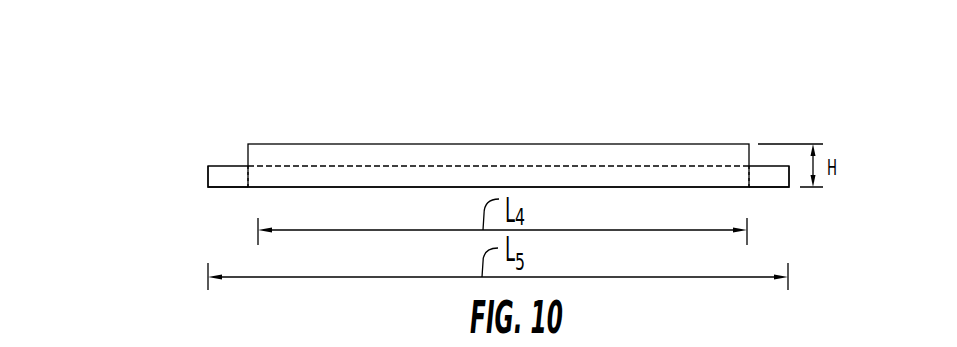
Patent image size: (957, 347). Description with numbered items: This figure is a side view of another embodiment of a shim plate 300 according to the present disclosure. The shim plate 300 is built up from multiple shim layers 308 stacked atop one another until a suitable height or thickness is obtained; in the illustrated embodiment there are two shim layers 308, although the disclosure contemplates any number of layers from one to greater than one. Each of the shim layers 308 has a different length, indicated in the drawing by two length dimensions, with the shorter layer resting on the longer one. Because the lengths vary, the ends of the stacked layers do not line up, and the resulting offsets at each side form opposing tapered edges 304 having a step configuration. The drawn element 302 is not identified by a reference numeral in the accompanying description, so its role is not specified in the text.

The shim plate 300 is at (213, 105).
The plate body 302 is at (431, 134).
The opposing tapered edges 304 is at (227, 177).
The shim layers 308 is at (527, 173).